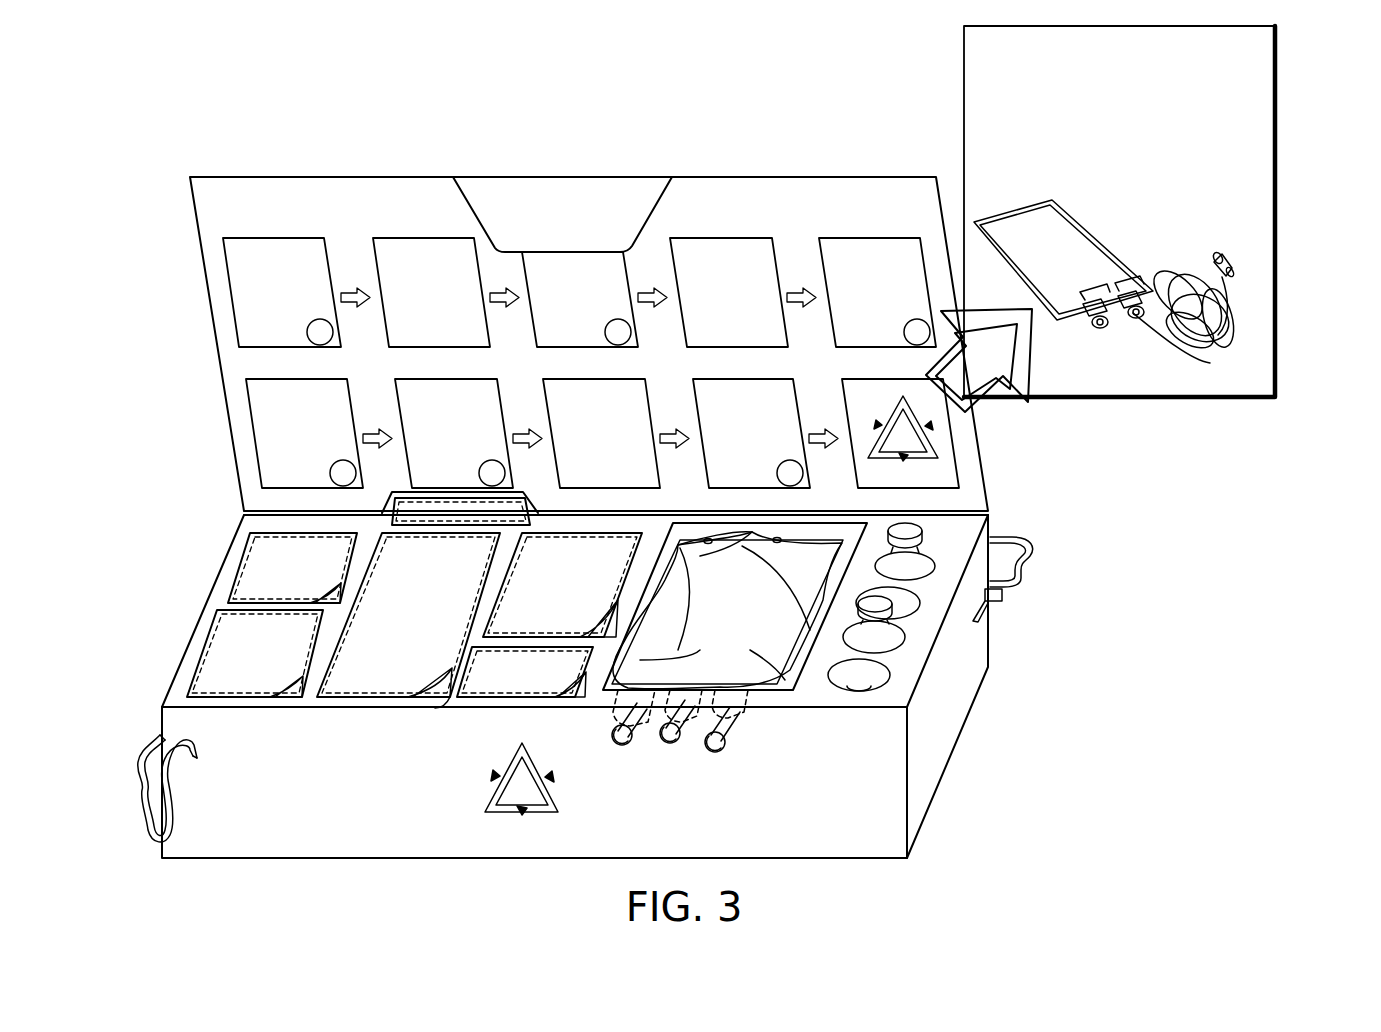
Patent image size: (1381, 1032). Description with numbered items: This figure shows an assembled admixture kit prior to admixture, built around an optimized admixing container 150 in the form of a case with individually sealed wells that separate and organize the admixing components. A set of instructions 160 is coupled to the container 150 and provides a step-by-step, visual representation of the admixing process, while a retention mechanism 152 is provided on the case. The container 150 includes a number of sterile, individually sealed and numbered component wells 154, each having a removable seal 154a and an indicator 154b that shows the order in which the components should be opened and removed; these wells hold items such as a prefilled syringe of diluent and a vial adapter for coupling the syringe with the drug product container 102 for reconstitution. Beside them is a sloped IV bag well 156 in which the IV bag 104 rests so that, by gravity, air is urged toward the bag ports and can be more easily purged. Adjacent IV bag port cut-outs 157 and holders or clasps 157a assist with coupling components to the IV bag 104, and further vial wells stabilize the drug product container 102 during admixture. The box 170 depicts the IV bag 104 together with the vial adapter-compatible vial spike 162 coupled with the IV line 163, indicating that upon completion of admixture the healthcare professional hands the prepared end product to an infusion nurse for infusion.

The drug product container 102 is at (946, 566).
The IV bag 104 is at (750, 663).
The container 150 is at (177, 673).
The retention mechanism 152 is at (138, 805).
The component well 154 is at (238, 521).
The removable seal 154a is at (323, 598).
The indicator 154b is at (263, 558).
The IV bag well 156 is at (846, 537).
The IV bag port cut-out 157 is at (742, 726).
The holder/clasp 157a is at (680, 739).
The instructions 160 is at (195, 209).
The vial spike 162 is at (1233, 263).
The IV line 163 is at (1177, 350).
The box 170 is at (1276, 203).